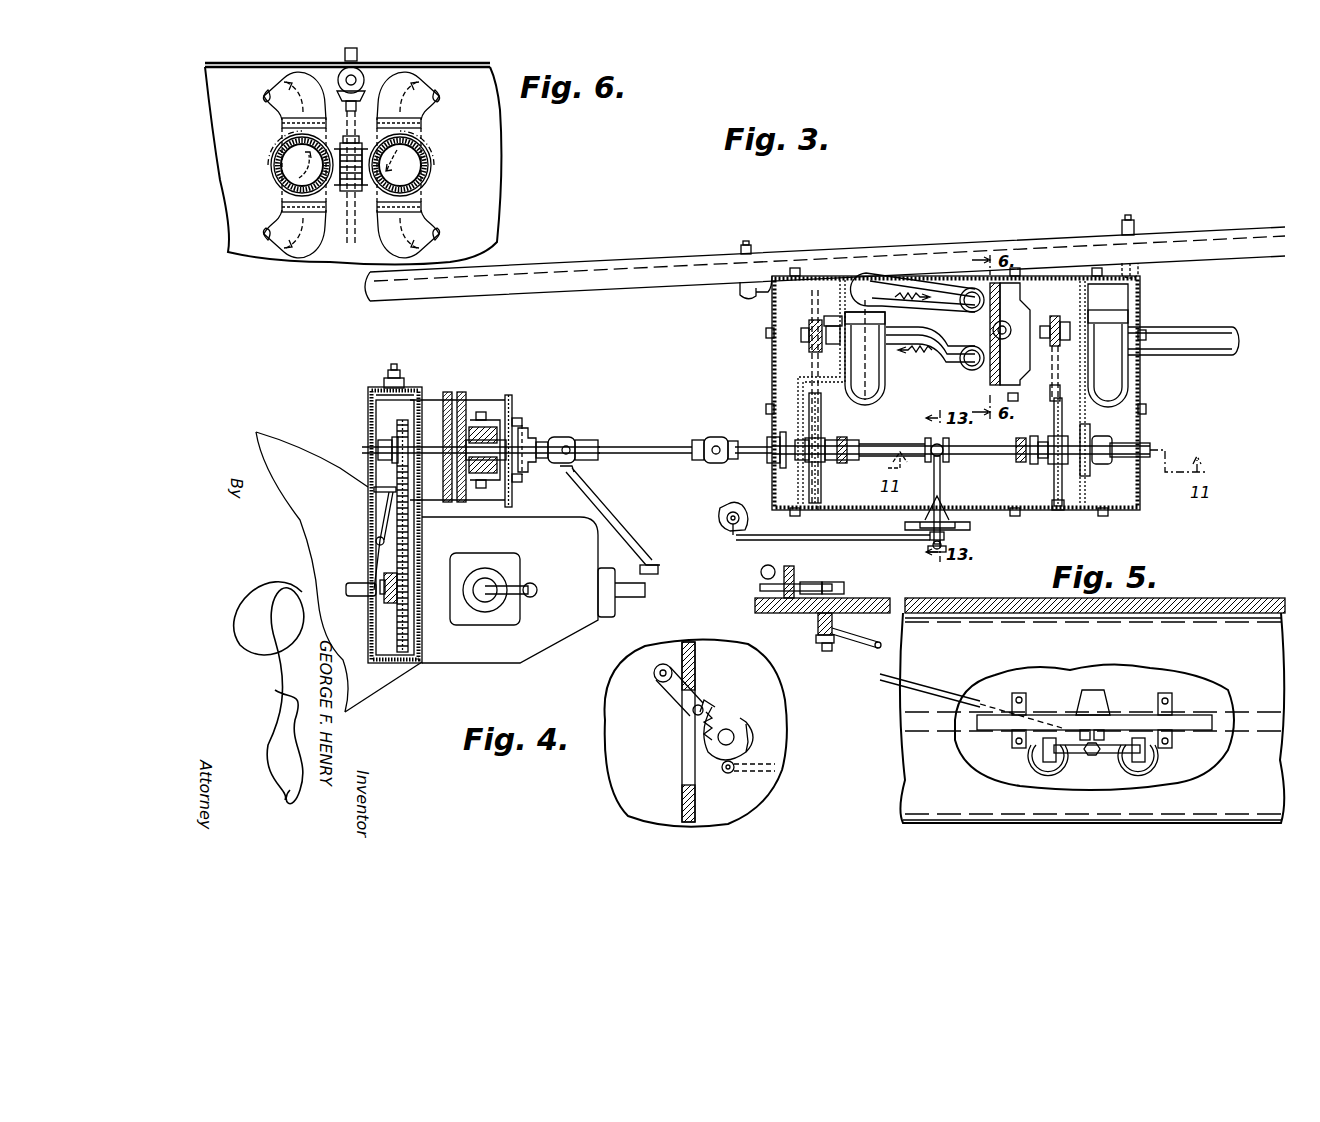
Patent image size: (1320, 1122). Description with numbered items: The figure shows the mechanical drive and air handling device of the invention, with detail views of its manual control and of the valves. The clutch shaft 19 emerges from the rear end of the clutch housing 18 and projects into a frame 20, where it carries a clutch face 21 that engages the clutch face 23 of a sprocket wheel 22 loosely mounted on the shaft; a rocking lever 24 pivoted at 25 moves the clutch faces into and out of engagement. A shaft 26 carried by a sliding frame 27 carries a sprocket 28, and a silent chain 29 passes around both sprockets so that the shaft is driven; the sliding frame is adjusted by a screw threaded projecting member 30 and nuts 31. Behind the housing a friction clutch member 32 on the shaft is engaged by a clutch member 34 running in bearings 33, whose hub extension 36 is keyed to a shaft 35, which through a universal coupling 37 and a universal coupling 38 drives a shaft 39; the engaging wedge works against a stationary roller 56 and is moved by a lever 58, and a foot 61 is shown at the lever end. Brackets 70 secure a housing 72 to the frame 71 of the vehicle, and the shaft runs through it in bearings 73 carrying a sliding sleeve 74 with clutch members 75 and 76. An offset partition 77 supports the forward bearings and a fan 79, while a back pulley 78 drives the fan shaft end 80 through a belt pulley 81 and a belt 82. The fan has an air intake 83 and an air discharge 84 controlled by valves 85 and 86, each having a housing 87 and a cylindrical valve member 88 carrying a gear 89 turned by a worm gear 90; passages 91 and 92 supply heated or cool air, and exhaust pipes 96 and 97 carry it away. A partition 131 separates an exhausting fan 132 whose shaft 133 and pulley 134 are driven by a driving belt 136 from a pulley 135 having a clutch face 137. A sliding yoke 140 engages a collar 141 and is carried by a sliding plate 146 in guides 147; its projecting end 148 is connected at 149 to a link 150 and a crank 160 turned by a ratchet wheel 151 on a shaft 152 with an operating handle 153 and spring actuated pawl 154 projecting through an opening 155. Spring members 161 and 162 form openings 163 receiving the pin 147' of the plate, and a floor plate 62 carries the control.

In FIG. 3, the rear end of the clutch housing 18 is at (285, 447).
In FIG. 3, the clutch shaft 19 is at (358, 597).
In FIG. 3, the frame 20 is at (395, 668).
In FIG. 3, the clutch face 21 is at (409, 632).
In FIG. 3, the sprocket wheel 22 is at (416, 582).
In FIG. 3, the clutch face 23 is at (384, 574).
In FIG. 3, the rocking lever 24 is at (388, 503).
In FIG. 3, the pivot 25 is at (376, 539).
In FIG. 3, the shaft 26 is at (372, 450).
In FIG. 3, the sliding frame 27 is at (376, 389).
In FIG. 3, the sprocket 28 is at (398, 422).
In FIG. 3, the silent chain 29 is at (405, 548).
In FIG. 3, the screw threaded projecting member 30 is at (393, 370).
In FIG. 3, the nuts 31 is at (399, 366).
In FIG. 3, the friction clutch member 32 is at (448, 392).
In FIG. 3, the bearings 33 is at (490, 418).
In FIG. 3, the clutch member 34 is at (463, 392).
In FIG. 3, the shaft 35 is at (556, 442).
In FIG. 3, the hub extension 36 is at (538, 432).
In FIG. 3, the universal coupling 37 is at (590, 447).
In FIG. 3, the universal coupling 38 is at (714, 440).
In FIG. 3, the shaft 39 is at (735, 462).
In FIG. 3, the stationary roller 56 is at (525, 432).
In FIG. 3, the lever 58 is at (590, 495).
In FIG. 3, the foot 61 is at (660, 570).
In FIG. 5, the floor plate 62 is at (1202, 600).
In FIG. 3, the brackets 70 is at (772, 312).
In FIG. 3, the frame of the vehicle 71 is at (690, 262).
In FIG. 3, the housing 72 is at (1136, 488).
In FIG. 3, the bearings 73 is at (772, 440).
In FIG. 3, the sliding sleeve 74 is at (904, 444).
In FIG. 3, the clutch member 75 is at (880, 442).
In FIG. 3, the clutch member 76 is at (1030, 440).
In FIG. 3, the offset partition 77 is at (798, 380).
In FIG. 3, the back pulley 78 is at (822, 470).
In FIG. 3, the fan 79 is at (885, 380).
In FIG. 3, the projected fan shaft 80 is at (808, 334).
In FIG. 3, the belt pulley 81 is at (831, 324).
In FIG. 3, the belt 82 is at (822, 432).
In FIG. 3, the air intake 83 is at (946, 372).
In FIG. 3, the air discharge 84 is at (892, 288).
In FIG. 6, the valve 85 is at (430, 162).
In FIG. 3, the valve 85 is at (998, 336).
In FIG. 6, the valve 86 is at (290, 160).
In FIG. 3, the valve 86 is at (969, 334).
In FIG. 6, the housing 87 is at (282, 121).
In FIG. 6, the cylindrical valve member 88 is at (286, 176).
In FIG. 6, the gear 89 is at (345, 218).
In FIG. 6, the worm gear 90 is at (355, 142).
In FIG. 6, the passage 91 is at (410, 217).
In FIG. 6, the passage 92 is at (432, 80).
In FIG. 6, the exhaust pipe 96 is at (272, 76).
In FIG. 6, the exhaust pipe 97 is at (286, 248).
In FIG. 3, the partition 131 is at (1090, 482).
In FIG. 3, the exhausting fan 132 is at (1108, 342).
In FIG. 3, the shaft 133 is at (1052, 326).
In FIG. 3, the pulley 134 is at (1040, 372).
In FIG. 3, the pulley 135 is at (1058, 510).
In FIG. 3, the driving belt 136 is at (1050, 392).
In FIG. 3, the clutch face 137 is at (1058, 470).
In FIG. 3, the sliding yoke 140 is at (942, 490).
In FIG. 3, the collar 141 is at (928, 462).
In FIG. 5, the sliding plate 146 is at (1195, 732).
In FIG. 5, the guides 147 is at (1099, 699).
In FIG. 5, the pin 147' is at (1111, 711).
In FIG. 3, the projecting end 148 is at (952, 522).
In FIG. 3, the connection 149 is at (946, 547).
In FIG. 3, the link 150 is at (852, 640).
In FIG. 4, the link 150 is at (738, 776).
In FIG. 3, the ratchet wheel 151 is at (722, 512).
In FIG. 4, the ratchet wheel 151 is at (763, 738).
In FIG. 3, the shaft 152 is at (820, 614).
In FIG. 4, the shaft 152 is at (734, 730).
In FIG. 3, the operating handle 153 is at (812, 579).
In FIG. 4, the operating handle 153 is at (695, 690).
In FIG. 4, the spring actuated pawl 154 is at (706, 712).
In FIG. 4, the opening 155 is at (682, 757).
In FIG. 3, the crank 160 is at (733, 528).
In FIG. 5, the spring member 161 is at (1092, 718).
In FIG. 5, the spring member 162 is at (1050, 738).
In FIG. 5, the openings 163 is at (1080, 758).